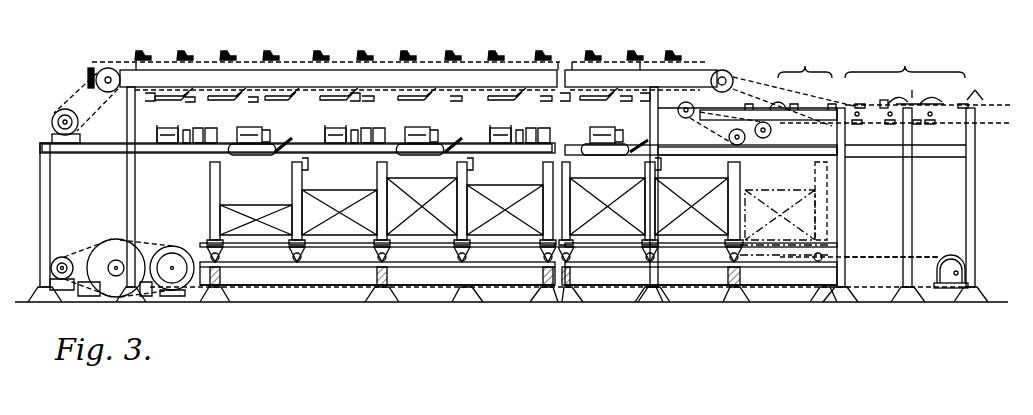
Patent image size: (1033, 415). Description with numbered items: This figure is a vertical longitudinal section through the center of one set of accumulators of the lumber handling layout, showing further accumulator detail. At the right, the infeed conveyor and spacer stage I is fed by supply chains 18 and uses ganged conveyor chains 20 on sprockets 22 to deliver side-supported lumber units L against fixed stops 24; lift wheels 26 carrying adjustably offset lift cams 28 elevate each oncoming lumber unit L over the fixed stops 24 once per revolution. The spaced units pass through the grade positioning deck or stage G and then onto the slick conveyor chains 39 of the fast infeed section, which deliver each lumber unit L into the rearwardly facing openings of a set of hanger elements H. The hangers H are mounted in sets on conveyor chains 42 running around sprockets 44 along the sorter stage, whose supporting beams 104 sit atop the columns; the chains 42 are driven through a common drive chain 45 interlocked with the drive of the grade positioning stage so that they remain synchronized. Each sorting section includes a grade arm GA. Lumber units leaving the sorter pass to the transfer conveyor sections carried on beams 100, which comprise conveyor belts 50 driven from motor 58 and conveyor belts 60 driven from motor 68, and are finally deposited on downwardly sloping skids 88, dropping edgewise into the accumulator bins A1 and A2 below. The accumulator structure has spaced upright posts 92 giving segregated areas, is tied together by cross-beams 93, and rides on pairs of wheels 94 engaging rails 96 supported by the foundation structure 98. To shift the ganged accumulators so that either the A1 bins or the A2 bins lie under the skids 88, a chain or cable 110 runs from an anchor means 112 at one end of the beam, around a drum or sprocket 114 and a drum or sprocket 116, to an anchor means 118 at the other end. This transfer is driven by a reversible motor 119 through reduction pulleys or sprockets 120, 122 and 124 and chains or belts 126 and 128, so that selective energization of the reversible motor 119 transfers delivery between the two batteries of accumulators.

The chains 18 is at (950, 103).
The ganged conveyor chains 20 is at (918, 120).
The sprockets 22 is at (934, 120).
The fixed stops 24 is at (884, 102).
The lift wheels 26 is at (870, 120).
The lift cam 28 is at (890, 120).
The slick conveyor chains 39 is at (747, 153).
The conveyor chains 42 is at (166, 60).
The sprockets 44 is at (733, 74).
The common drive chain 45 is at (780, 122).
The conveyor belts 50 is at (258, 132).
The motor 58 is at (297, 137).
The conveyor belts 60 is at (170, 128).
The motor 68 is at (216, 130).
The discharge rails or skids 88 is at (305, 165).
The upright posts 92 is at (208, 174).
The cross-beams 93 is at (214, 242).
The wheels 94 is at (303, 258).
The rails 96 is at (238, 248).
The foundation structure 98 is at (410, 290).
The beams 100 is at (133, 148).
The supporting beams 104 is at (249, 68).
The chain or cable 110 is at (865, 257).
The anchor means 112 is at (208, 255).
The drum or sprocket 114 is at (180, 290).
The drum or sprocket 116 is at (951, 257).
The anchor means 118 is at (738, 262).
The reversible motor 119 is at (54, 290).
The reduction pulley or sprocket 120 is at (104, 297).
The reduction pulley or sprocket 122 is at (114, 258).
The reduction pulley or sprocket 124 is at (174, 290).
The chain or belt 126 is at (82, 256).
The chain or belt 128 is at (142, 296).
The grade positioning deck or stage G is at (805, 64).
The infeed conveyor and spacer stage I is at (905, 64).
The hanger elements H is at (188, 50).
The lumber unit L is at (945, 88).
The grade arm GA is at (162, 102).
The accumulator section or bin A1 is at (783, 178).
The accumulator section or bin A2 is at (432, 206).